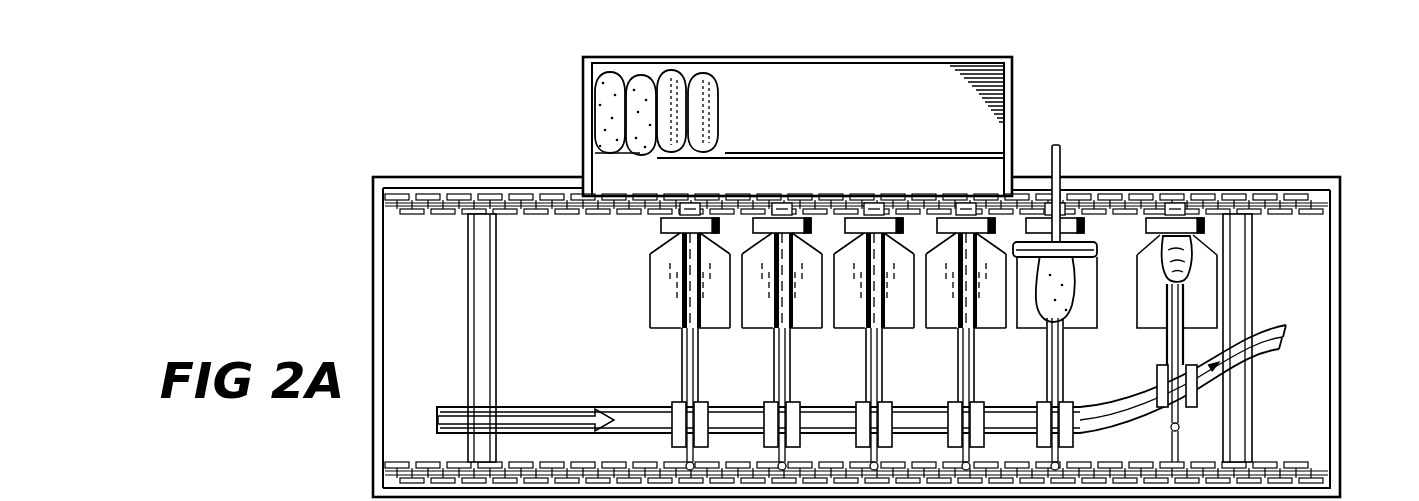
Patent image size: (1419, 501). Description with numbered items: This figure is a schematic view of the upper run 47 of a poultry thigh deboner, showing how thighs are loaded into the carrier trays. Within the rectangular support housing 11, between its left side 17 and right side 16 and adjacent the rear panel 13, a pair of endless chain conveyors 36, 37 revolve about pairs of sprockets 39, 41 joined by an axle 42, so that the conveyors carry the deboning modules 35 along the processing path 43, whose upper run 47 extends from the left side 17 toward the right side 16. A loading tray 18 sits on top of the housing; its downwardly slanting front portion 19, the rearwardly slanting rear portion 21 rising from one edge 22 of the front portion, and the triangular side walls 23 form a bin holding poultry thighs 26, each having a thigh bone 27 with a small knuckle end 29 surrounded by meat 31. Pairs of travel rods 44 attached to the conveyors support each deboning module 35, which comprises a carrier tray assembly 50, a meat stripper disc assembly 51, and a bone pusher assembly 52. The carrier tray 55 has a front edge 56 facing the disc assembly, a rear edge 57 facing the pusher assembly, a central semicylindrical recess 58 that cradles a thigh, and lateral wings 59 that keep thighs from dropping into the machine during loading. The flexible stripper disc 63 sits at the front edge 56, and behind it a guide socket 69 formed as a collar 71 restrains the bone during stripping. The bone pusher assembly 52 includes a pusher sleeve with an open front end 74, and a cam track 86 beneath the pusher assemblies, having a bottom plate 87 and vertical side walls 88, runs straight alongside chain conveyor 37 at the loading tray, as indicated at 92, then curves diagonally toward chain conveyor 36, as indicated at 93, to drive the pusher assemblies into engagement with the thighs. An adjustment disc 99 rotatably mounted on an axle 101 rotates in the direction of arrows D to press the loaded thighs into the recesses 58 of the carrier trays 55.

The support housing 11 is at (1350, 210).
The rear panel 13 is at (1125, 177).
The right side 16 is at (1341, 402).
The left side 17 is at (373, 340).
The loading tray 18 is at (1030, 135).
The front portion 19 is at (974, 187).
The rear portion 21 is at (922, 118).
The edge 22 is at (882, 152).
The side walls 23 is at (583, 103).
The poultry thigh 26 is at (731, 140).
The thigh bone 27 is at (720, 122).
The small knuckle end 29 is at (702, 155).
The meat 31 is at (708, 90).
The deboning module 35 is at (646, 325).
The chain conveyor 36 is at (540, 195).
The chain conveyor 37 is at (605, 462).
The sprockets 39 is at (448, 212).
The sprockets 41 is at (1301, 216).
The axle 42 is at (468, 333).
The processing path 43 is at (551, 330).
The travel rods 44 is at (686, 392).
The upper run 47 is at (508, 375).
The carrier tray assembly 50 is at (660, 332).
The meat stripper disc assembly 51 is at (853, 222).
The bone pusher assembly 52 is at (1084, 364).
The carrier tray 55 is at (648, 273).
The front edge 56 is at (657, 255).
The rear edge 57 is at (657, 340).
The semicylindrical recess 58 is at (684, 294).
The wings 59 is at (706, 314).
The stripper disc 63 is at (966, 194).
The guide socket 69 is at (1211, 203).
The collar 71 is at (1176, 205).
The open front end 74 is at (1170, 342).
The cam track 86 is at (1222, 371).
The bottom plate 87 is at (1262, 350).
The side walls 88 is at (1289, 328).
The straight section 92 is at (842, 422).
The angled section 93 is at (1110, 433).
The adjustment disc 99 is at (1096, 212).
The axle 101 is at (1061, 165).
The direction of rotation D is at (582, 410).